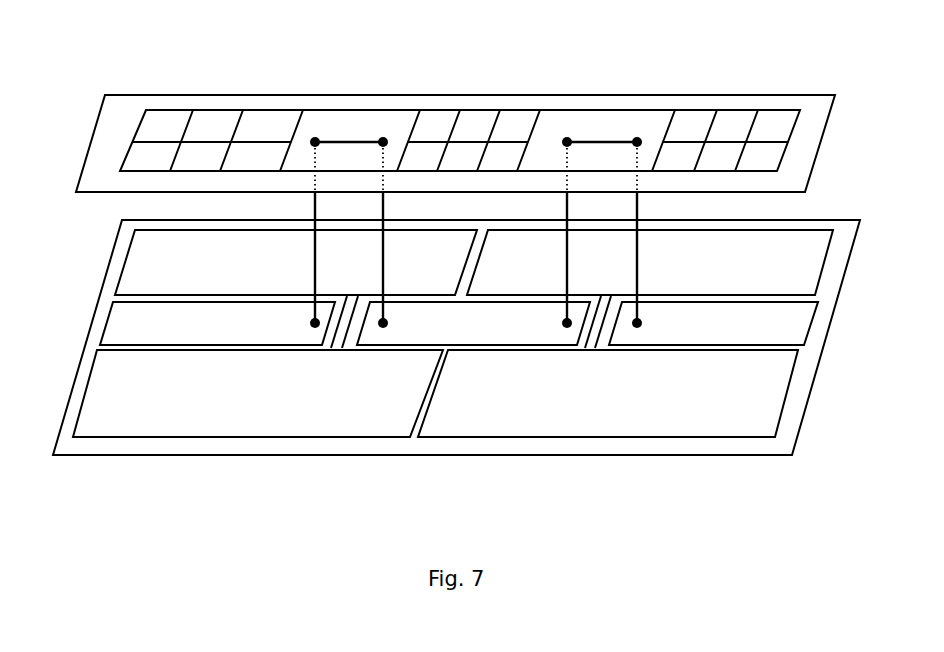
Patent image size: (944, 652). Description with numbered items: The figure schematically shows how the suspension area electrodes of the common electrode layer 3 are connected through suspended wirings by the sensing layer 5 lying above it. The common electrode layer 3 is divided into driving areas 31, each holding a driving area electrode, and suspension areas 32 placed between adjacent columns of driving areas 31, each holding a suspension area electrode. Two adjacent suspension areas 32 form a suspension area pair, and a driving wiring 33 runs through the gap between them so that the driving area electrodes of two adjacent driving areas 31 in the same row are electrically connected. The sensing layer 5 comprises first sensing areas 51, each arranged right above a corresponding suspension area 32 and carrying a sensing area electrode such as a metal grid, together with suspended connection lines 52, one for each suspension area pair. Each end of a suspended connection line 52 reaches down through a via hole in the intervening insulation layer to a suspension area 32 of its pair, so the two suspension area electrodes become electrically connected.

The common electrode layer 3 is at (210, 444).
The sensing layer 5 is at (203, 97).
The driving area 31 is at (453, 333).
The suspension area 32 is at (459, 323).
The driving wiring 33 is at (600, 337).
The first sensing area 51 is at (683, 108).
The suspended connection line 52 is at (350, 142).